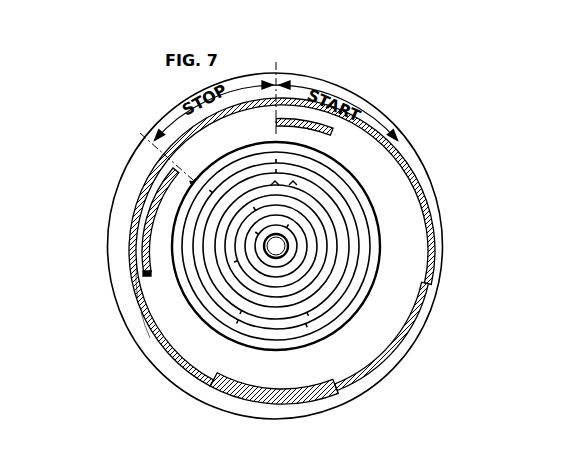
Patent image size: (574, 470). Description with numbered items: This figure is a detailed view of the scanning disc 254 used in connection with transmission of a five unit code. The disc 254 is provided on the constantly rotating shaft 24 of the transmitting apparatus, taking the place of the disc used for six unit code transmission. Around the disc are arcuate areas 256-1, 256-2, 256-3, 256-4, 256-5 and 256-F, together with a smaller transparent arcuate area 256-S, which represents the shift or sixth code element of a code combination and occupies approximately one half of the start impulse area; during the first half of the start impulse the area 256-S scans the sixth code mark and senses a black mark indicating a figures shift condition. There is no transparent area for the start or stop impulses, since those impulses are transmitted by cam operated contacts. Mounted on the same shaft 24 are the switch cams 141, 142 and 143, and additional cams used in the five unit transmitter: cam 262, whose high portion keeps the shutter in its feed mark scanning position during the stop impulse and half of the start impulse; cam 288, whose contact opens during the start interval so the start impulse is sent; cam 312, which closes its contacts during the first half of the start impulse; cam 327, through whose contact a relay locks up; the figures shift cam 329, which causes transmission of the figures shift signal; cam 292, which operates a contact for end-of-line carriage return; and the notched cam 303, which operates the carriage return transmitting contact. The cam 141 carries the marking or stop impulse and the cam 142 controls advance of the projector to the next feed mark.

The scanning disc 254 is at (377, 112).
The cam segment 256-1 is at (398, 135).
The cam segment 256-2 is at (423, 298).
The cam segment 256-3 is at (318, 400).
The cam segment 256-4 is at (140, 293).
The cam segment 256-5 is at (147, 213).
The cam segment 256-F is at (152, 332).
The transparent arcuate area 256-S is at (280, 121).
The cam 292 is at (323, 161).
The cam 327 is at (332, 177).
The figures shift cam 329 is at (362, 205).
The cam 312 is at (289, 243).
The switch cam 143 is at (289, 246).
The switch cam 142 is at (289, 248).
The switch cam 141 is at (288, 250).
The cam 262 is at (287, 253).
The cam 288 is at (284, 256).
The notched cam 303 is at (280, 258).
The shaft 24 is at (273, 259).